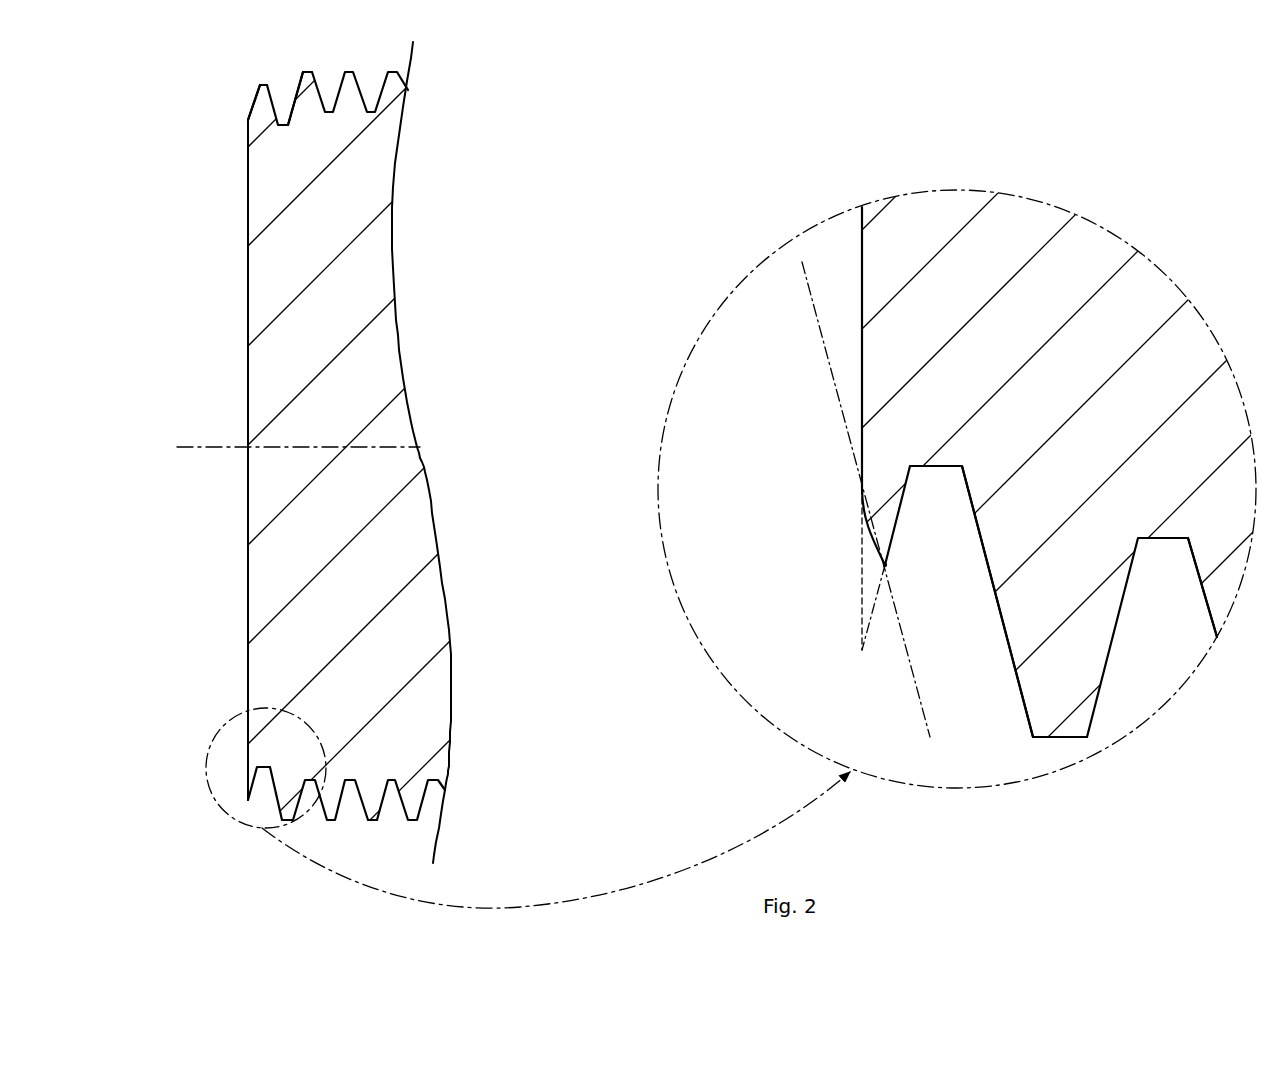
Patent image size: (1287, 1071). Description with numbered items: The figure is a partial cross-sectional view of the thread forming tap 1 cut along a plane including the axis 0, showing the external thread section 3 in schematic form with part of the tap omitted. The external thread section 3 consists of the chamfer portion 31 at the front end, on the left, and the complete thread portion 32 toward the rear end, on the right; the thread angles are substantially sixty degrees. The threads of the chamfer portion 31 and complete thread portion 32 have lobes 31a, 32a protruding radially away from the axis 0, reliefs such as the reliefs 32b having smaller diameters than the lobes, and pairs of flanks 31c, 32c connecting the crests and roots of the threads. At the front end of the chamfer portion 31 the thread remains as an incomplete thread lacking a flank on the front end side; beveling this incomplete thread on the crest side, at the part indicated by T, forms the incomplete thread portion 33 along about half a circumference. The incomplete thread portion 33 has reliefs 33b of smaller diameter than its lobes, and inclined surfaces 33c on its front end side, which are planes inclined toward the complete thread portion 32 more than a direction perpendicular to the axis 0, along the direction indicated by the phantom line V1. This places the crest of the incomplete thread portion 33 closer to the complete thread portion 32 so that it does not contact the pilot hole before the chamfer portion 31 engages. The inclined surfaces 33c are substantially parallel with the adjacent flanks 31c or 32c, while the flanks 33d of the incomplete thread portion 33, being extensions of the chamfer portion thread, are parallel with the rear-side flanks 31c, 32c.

The thread forming tap 1 is at (528, 102).
The external thread section 3 is at (418, 146).
The axis 0 is at (193, 446).
The chamfer portion 31 is at (236, 70).
The lobes 31a is at (266, 84).
The flanks 31c is at (256, 96).
The complete thread portion 32 is at (357, 58).
The lobes 32a is at (307, 73).
The reliefs 32b is at (370, 818).
The flanks 32c is at (302, 86).
The incomplete thread portion 33 is at (220, 834).
The reliefs 33b is at (886, 567).
The inclined surfaces 33c is at (875, 525).
The flanks 33d is at (893, 522).
The phantom line V1 is at (805, 312).
The beveled part T is at (860, 587).